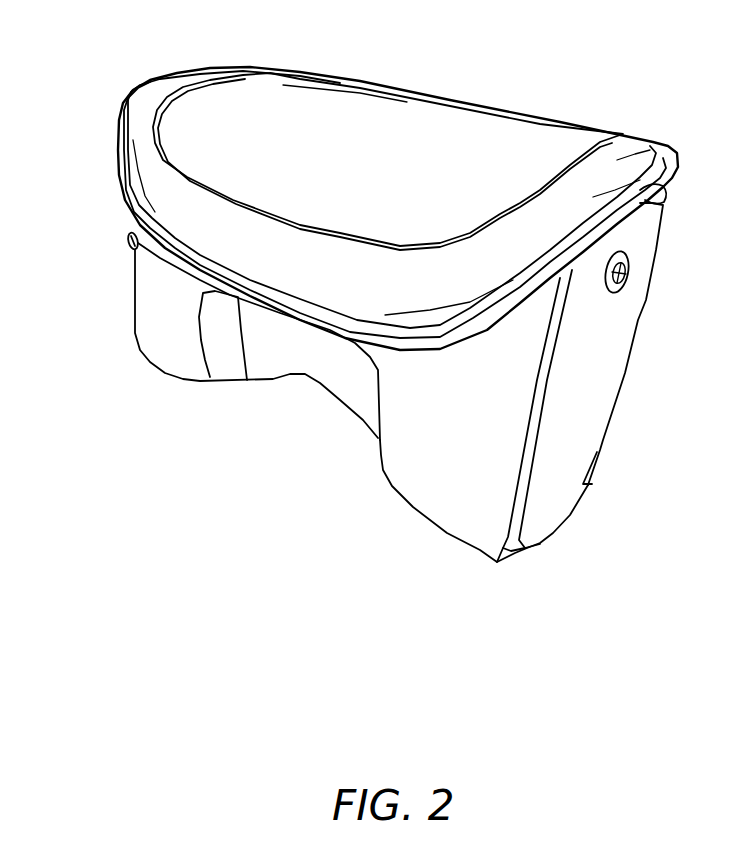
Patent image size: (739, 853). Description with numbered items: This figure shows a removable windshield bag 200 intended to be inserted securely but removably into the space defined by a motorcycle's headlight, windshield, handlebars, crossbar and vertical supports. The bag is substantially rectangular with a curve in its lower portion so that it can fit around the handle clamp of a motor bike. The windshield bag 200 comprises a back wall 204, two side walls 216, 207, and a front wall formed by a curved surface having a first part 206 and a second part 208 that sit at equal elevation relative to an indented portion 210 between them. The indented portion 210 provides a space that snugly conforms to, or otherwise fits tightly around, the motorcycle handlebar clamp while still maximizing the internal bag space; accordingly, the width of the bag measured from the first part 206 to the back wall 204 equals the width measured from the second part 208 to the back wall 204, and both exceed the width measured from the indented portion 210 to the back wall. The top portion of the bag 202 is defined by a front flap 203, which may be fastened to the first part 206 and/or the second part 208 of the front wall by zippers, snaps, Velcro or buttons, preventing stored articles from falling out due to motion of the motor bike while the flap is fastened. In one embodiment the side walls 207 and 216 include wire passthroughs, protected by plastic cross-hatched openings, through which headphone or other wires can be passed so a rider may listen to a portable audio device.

The windshield bag 200 is at (679, 625).
The top portion of the bag 202 is at (327, 100).
The front flap 203 is at (145, 118).
The back wall 204 is at (492, 93).
The first part of the front wall 206 is at (142, 302).
The side wall 207 is at (617, 352).
The second part of the front wall 208 is at (447, 515).
The indented portion 210 is at (297, 368).
The side wall 216 is at (132, 222).